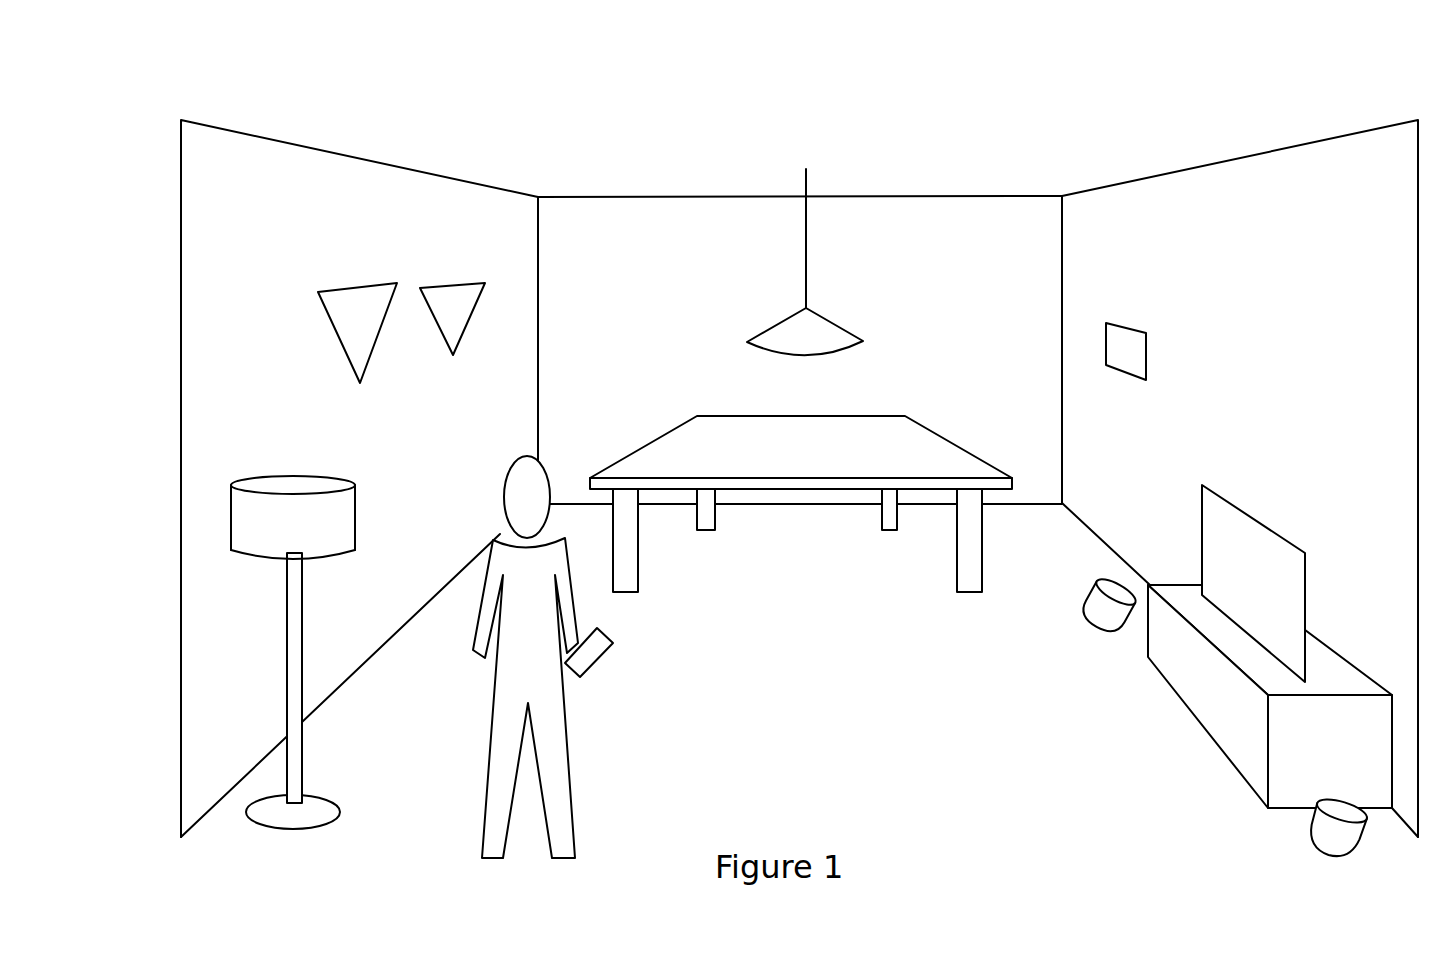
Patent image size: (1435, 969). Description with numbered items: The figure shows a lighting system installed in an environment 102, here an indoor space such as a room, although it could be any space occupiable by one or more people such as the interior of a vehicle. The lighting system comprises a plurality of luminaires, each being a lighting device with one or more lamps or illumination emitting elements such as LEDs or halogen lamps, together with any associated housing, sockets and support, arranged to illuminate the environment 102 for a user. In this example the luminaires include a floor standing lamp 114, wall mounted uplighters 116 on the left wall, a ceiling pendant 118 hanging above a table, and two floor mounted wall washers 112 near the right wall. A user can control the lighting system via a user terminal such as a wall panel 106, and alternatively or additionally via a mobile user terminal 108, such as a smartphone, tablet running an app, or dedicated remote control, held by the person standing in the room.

The environment 102 is at (1037, 157).
The wall panel 106 is at (1125, 328).
The mobile user terminal 108 is at (597, 662).
The floor mounted wall washers 112 is at (1082, 625).
The floor standing lamp 114 is at (233, 518).
The wall mounted uplighters 116 is at (450, 283).
The ceiling pendant 118 is at (773, 323).